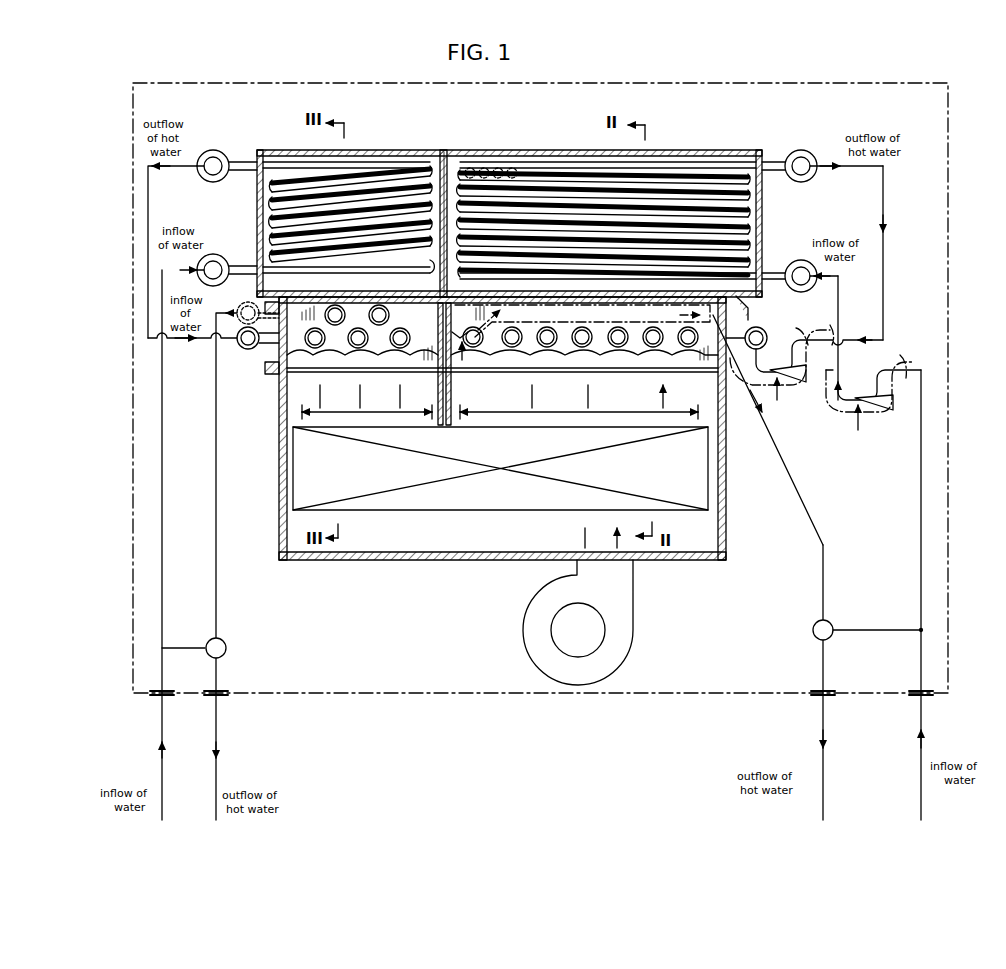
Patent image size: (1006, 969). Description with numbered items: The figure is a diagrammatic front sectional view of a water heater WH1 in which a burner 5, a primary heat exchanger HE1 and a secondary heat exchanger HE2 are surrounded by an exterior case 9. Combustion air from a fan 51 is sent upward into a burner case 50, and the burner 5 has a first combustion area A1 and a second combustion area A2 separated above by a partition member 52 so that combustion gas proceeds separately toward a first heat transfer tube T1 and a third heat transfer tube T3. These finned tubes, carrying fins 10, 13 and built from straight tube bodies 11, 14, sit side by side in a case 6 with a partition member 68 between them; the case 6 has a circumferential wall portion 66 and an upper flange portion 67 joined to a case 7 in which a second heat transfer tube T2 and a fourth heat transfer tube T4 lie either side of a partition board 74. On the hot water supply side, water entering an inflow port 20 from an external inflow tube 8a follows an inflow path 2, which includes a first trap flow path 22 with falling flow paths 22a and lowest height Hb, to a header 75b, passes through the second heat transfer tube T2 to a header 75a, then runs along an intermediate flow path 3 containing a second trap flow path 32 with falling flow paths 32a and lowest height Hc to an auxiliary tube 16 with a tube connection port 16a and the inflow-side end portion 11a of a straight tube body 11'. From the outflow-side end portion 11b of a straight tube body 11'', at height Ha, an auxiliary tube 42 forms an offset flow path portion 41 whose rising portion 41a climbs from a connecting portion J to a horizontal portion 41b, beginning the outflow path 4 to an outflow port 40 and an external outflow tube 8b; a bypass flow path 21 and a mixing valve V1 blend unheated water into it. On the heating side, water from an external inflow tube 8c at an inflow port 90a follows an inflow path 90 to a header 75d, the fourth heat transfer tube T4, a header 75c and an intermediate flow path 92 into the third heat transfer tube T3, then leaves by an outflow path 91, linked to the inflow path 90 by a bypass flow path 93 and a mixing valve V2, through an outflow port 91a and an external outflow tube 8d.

The water heater WH1 is at (284, 82).
The exterior case 9 is at (696, 84).
The secondary heat exchanger HE2 is at (694, 150).
The primary heat exchanger HE1 is at (750, 316).
The header 75c is at (216, 151).
The header 75d is at (218, 255).
The header 75a is at (806, 151).
The header 75b is at (800, 260).
The fourth heat transfer tube T4 is at (428, 158).
The second heat transfer tube T2 is at (518, 163).
The partition board 74 is at (446, 150).
The case 7 is at (526, 150).
The intermediate flow path 3 is at (885, 258).
The third heat transfer tube T3 is at (378, 316).
The partition member 68 is at (440, 300).
The rising portion 41a is at (484, 318).
The first heat transfer tube T1 is at (549, 320).
The auxiliary tube 42 is at (574, 320).
The offset flow path portion 41 is at (609, 318).
The horizontal portion 41b is at (652, 318).
The upper flange portion 67 is at (746, 298).
The tube connection port 16a is at (780, 345).
The intermediate flow path 92 is at (186, 340).
The circumferential wall portion 66 is at (270, 355).
The case 6 is at (276, 362).
The fins 13 is at (318, 350).
The straight tube bodies 14 is at (362, 350).
The partition member 52 is at (440, 384).
The height of outflow-side end portion Ha is at (462, 366).
The straight tube body 11'' is at (501, 372).
The outflow-side end portion 11b is at (484, 345).
The straight tube bodies 11 is at (580, 360).
The fins 10 is at (618, 350).
The inflow-side end portion 11a is at (690, 345).
The straight tube body 11' is at (705, 371).
The auxiliary tube 16 is at (752, 366).
The height of lowest portion of second trap flow path Hc is at (764, 393).
The falling flow paths 32a is at (790, 386).
The second trap flow path 32 is at (780, 385).
The height of lowest portion of first trap flow path Hb is at (847, 423).
The falling flow paths 22a is at (872, 392).
The first trap flow path 22 is at (870, 424).
The connecting portion J is at (470, 332).
The second combustion area A2 is at (367, 412).
The first combustion area A1 is at (579, 412).
The burner 5 is at (418, 512).
The burner case 50 is at (728, 508).
The inflow path for water 90 is at (164, 588).
The outflow path for hot water 91 is at (218, 608).
The bypass flow path 93 is at (188, 646).
The mixing valve V2 is at (226, 640).
The fan 51 is at (630, 628).
The outflow path for hot water 4 is at (821, 584).
The inflow path for water 2 is at (918, 586).
The mixing valve V1 is at (814, 626).
The bypass flow path 21 is at (878, 628).
The inflow port for water 90a is at (166, 698).
The outflow port for hot water 91a is at (220, 698).
The outflow port for hot water 40 is at (814, 698).
The inflow port for water 20 is at (912, 698).
The external inflow tube of water 8c is at (164, 768).
The external outflow tube of water 8d is at (218, 768).
The external outflow tube of water 8b is at (821, 752).
The external inflow tube of water 8a is at (919, 750).